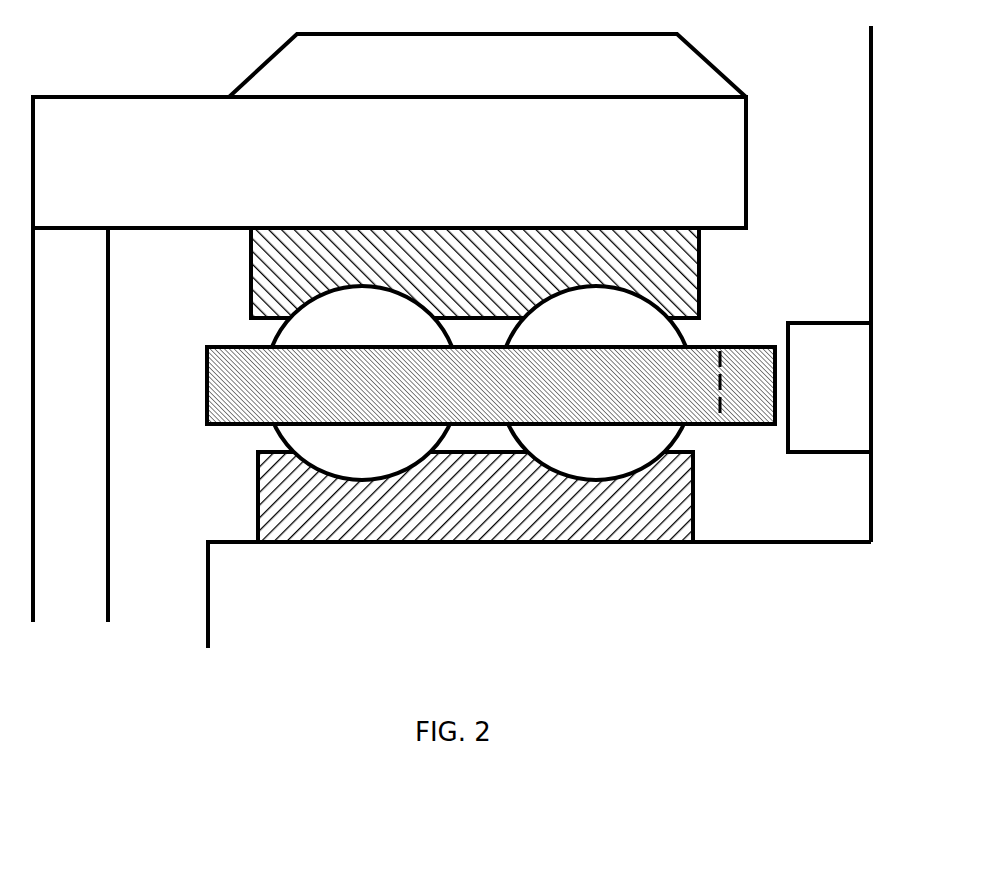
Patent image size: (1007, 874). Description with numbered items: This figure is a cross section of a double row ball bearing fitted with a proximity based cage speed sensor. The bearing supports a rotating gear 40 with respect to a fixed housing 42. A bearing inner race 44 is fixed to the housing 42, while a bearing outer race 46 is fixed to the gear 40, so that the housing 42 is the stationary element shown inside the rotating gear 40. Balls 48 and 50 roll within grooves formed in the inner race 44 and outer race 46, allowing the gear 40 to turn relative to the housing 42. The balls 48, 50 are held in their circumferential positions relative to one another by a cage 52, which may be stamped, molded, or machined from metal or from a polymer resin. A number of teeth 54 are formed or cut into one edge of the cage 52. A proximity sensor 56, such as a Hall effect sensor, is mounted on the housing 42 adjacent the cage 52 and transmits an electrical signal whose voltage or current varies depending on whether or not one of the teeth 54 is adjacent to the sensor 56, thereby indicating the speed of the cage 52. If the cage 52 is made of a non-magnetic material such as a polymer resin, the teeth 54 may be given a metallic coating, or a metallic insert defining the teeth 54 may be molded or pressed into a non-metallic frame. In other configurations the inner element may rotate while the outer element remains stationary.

The gear 40 is at (250, 75).
The fixed housing 42 is at (620, 609).
The bearing inner race 44 is at (258, 487).
The bearing outer race 46 is at (251, 267).
The ball 48 is at (378, 464).
The ball 50 is at (612, 464).
The cage 52 is at (207, 383).
The teeth 54 is at (737, 424).
The proximity sensor 56 is at (853, 321).